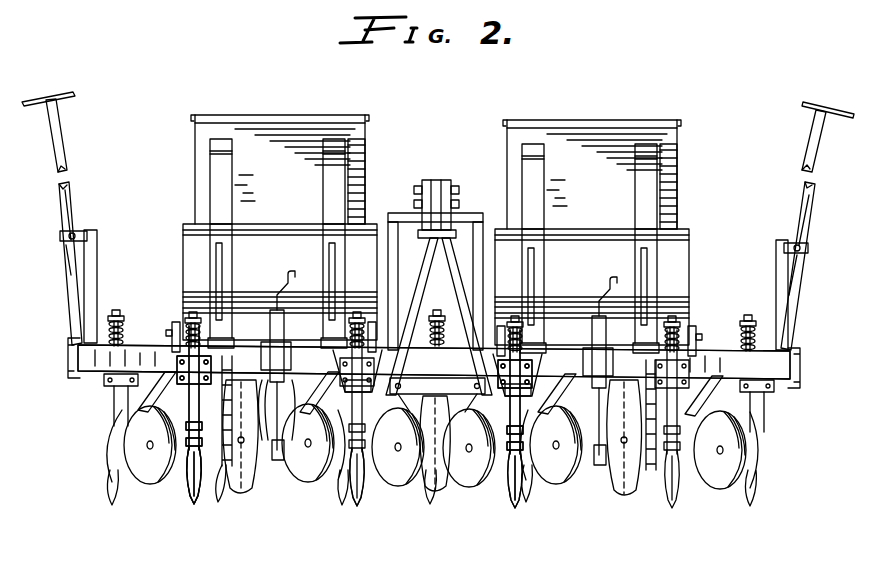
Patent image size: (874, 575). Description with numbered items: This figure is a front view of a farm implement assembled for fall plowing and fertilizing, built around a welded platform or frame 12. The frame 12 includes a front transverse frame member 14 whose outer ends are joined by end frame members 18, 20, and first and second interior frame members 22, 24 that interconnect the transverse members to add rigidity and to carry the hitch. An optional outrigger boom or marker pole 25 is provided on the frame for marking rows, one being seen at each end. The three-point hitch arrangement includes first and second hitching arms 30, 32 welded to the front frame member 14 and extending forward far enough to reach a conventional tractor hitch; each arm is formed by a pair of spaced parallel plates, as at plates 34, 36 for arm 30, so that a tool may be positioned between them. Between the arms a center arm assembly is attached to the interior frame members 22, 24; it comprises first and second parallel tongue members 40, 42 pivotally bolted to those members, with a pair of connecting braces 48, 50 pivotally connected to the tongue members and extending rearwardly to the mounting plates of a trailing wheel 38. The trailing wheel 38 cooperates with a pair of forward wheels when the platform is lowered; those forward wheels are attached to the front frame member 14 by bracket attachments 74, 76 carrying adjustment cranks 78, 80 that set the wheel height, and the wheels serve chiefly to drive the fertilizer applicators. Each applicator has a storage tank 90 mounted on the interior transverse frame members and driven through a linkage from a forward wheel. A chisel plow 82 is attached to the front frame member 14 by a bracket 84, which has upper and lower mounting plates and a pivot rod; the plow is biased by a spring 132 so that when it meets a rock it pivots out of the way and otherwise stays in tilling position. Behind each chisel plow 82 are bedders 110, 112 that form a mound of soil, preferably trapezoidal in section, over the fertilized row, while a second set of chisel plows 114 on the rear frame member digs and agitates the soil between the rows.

The platform or frame 12 is at (718, 347).
The front transverse frame member 14 is at (776, 380).
The end frame member 18 is at (794, 349).
The end frame member 20 is at (74, 378).
The first interior frame member 22 is at (386, 386).
The second interior frame member 24 is at (498, 388).
The outrigger boom or marker pole 25 is at (70, 204).
The first hitching arm 30 is at (342, 370).
The second hitching arm 32 is at (532, 370).
The parallel plate 34 is at (270, 396).
The parallel plate 36 is at (296, 386).
The trailing wheel 38 is at (442, 482).
The first tongue member 40 is at (420, 200).
The second tongue member 42 is at (452, 202).
The connecting brace 48 is at (428, 270).
The connecting brace 50 is at (442, 278).
The bracket attachment 74 is at (286, 318).
The bracket attachment 76 is at (592, 322).
The adjustment crank 78 is at (282, 276).
The adjustment crank 80 is at (604, 284).
The chisel plow 82 is at (192, 478).
The bracket 84 is at (185, 383).
The storage tank 90 is at (355, 160).
The bedder 110 is at (166, 482).
The bedder 112 is at (222, 470).
The chisel plow 114 is at (266, 488).
The spring 132 is at (124, 328).